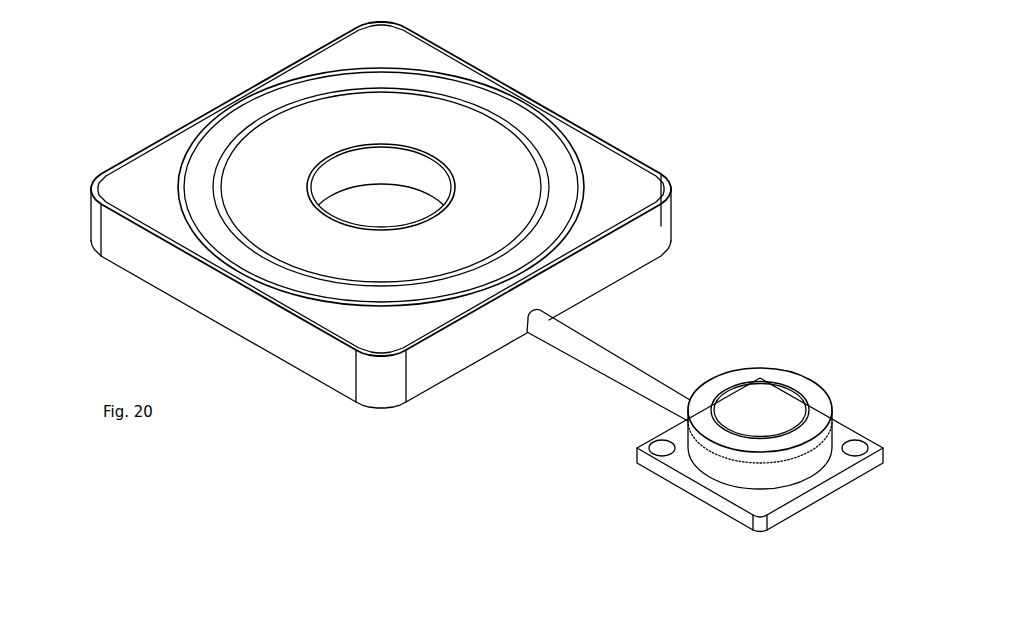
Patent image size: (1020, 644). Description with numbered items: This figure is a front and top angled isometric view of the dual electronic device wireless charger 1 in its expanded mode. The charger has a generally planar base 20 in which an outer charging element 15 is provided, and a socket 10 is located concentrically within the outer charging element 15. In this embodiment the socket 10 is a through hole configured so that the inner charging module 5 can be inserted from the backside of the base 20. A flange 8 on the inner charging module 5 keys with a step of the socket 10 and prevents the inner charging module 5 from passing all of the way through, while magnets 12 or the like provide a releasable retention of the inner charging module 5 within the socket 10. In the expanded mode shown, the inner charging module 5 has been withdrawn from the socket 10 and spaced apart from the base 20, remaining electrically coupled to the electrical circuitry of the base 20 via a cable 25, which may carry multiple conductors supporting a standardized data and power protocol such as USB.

The dual electronic device wireless charger 1 is at (617, 157).
The base 20 is at (145, 177).
The outer charging element 15 is at (448, 132).
The socket 10 is at (378, 208).
The cable 25 is at (623, 368).
The flange 8 is at (760, 503).
The magnets 12 is at (658, 452).
The inner charging module 5 is at (770, 400).